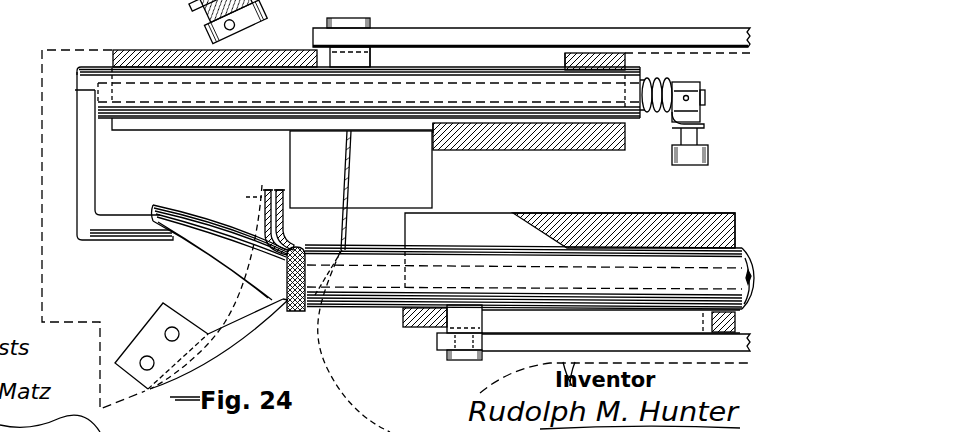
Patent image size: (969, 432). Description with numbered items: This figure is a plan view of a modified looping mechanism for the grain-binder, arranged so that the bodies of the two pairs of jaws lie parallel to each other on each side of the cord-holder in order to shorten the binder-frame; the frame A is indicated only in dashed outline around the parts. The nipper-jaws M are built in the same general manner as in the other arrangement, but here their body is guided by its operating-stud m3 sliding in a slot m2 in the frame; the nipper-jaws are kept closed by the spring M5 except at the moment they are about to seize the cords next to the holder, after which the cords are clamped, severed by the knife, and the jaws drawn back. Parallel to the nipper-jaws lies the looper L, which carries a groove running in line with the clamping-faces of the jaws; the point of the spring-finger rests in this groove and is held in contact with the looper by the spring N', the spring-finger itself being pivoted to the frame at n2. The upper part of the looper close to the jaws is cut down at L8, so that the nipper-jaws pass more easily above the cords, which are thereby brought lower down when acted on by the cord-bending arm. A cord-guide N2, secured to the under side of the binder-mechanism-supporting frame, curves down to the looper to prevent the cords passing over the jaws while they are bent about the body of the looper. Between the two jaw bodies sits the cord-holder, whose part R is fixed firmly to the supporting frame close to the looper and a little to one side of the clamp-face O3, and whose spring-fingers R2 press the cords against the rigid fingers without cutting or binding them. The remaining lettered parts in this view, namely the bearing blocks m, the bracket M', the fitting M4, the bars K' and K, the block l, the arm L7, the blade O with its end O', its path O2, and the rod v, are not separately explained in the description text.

The frame A is at (80, 229).
The bearing blocks (hatched) m is at (166, 46).
The slot m2 is at (425, 68).
The operating-stud m3 is at (350, 68).
The nipper-jaws M is at (358, 100).
The bracket M' is at (124, 156).
The spring M5 is at (656, 86).
The elbow fitting M4 is at (700, 136).
The upper bar K' is at (531, 27).
The lower bar K is at (576, 349).
The part of the cord-holder R is at (361, 169).
The spring-fingers R2 is at (336, 190).
The block l is at (570, 240).
The looper L is at (452, 285).
The arm L7 is at (220, 252).
The cut-down part of the looper L8 is at (307, 271).
The blade O is at (219, 344).
The blade end O' is at (118, 391).
The blade path O2 is at (270, 308).
The clamp-face O3 is at (277, 208).
The spring rod v is at (295, 243).
The spring N' is at (238, 23).
The pivot of the spring-finger n2 is at (200, 29).
The cord-guide N2 is at (173, 346).